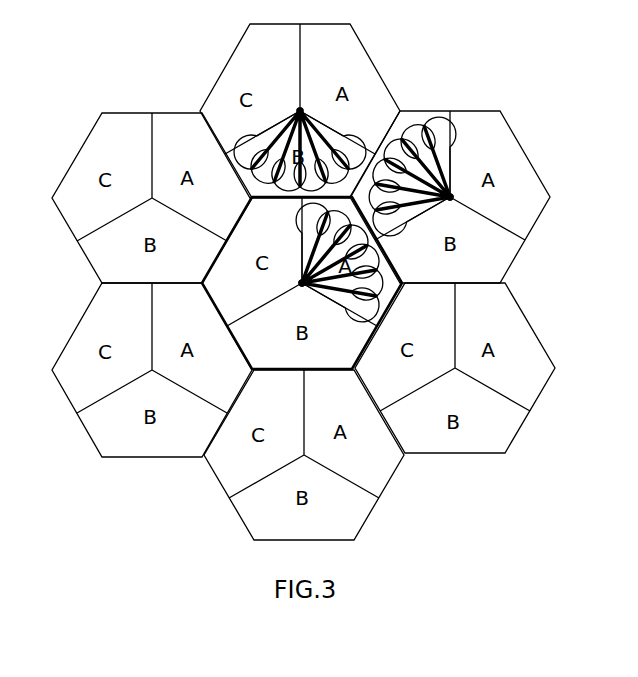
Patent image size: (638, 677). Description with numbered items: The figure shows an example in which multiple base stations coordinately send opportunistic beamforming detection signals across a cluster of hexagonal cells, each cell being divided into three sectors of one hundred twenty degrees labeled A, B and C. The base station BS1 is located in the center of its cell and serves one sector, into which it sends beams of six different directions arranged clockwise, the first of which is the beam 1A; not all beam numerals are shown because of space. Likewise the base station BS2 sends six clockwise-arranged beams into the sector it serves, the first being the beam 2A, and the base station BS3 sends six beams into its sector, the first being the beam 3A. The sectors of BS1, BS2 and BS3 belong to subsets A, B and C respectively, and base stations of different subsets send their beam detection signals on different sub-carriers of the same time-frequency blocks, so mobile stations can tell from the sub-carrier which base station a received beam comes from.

The beam 1A is at (302, 244).
The beam 2A is at (344, 143).
The beam 3A is at (397, 218).
The BS 1 BS1 is at (280, 286).
The BS 2 BS2 is at (304, 102).
The BS 3 BS3 is at (459, 207).